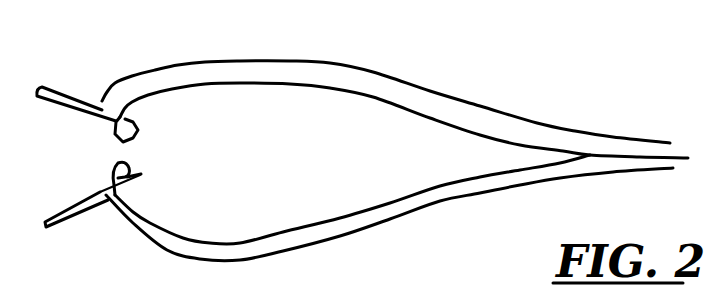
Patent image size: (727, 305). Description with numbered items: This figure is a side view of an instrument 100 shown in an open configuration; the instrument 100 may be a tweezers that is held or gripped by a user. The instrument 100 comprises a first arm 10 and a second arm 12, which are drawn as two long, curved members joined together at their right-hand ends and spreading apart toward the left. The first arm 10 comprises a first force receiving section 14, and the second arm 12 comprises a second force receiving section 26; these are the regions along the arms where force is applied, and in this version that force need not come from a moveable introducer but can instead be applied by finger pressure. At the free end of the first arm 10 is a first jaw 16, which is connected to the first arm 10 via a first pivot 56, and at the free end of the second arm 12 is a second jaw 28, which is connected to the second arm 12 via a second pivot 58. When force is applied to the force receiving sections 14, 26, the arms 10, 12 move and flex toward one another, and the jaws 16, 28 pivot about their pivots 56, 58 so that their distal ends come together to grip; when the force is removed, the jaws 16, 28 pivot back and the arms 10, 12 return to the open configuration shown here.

The instrument 100 is at (512, 52).
The first arm 10 is at (544, 116).
The second arm 12 is at (471, 201).
The first force receiving section 14 is at (403, 83).
The second force receiving section 26 is at (402, 217).
The first jaw 16 is at (65, 97).
The second jaw 28 is at (58, 218).
The first pivot 56 is at (101, 100).
The second pivot 58 is at (108, 205).